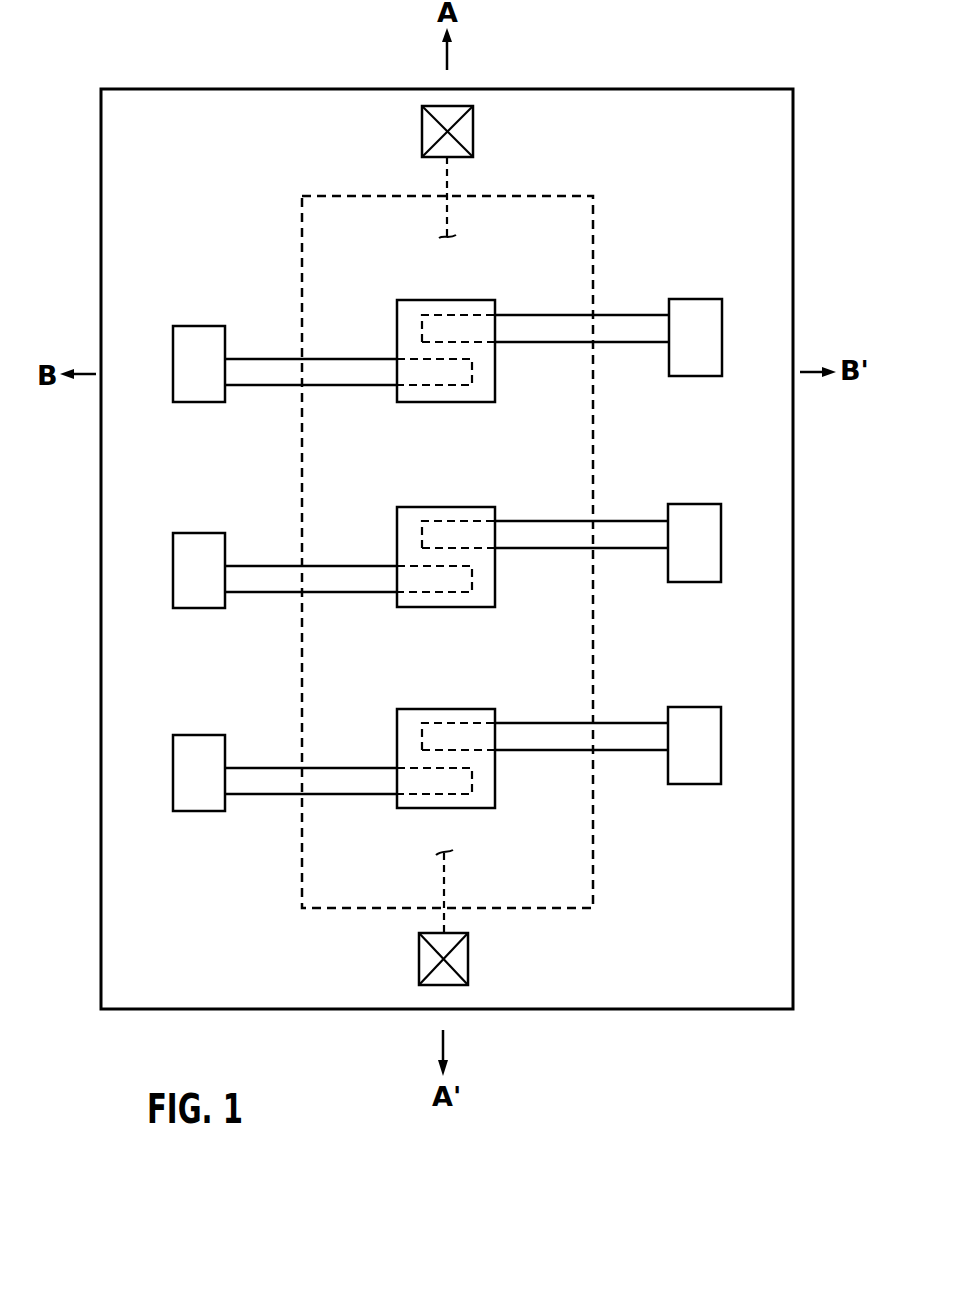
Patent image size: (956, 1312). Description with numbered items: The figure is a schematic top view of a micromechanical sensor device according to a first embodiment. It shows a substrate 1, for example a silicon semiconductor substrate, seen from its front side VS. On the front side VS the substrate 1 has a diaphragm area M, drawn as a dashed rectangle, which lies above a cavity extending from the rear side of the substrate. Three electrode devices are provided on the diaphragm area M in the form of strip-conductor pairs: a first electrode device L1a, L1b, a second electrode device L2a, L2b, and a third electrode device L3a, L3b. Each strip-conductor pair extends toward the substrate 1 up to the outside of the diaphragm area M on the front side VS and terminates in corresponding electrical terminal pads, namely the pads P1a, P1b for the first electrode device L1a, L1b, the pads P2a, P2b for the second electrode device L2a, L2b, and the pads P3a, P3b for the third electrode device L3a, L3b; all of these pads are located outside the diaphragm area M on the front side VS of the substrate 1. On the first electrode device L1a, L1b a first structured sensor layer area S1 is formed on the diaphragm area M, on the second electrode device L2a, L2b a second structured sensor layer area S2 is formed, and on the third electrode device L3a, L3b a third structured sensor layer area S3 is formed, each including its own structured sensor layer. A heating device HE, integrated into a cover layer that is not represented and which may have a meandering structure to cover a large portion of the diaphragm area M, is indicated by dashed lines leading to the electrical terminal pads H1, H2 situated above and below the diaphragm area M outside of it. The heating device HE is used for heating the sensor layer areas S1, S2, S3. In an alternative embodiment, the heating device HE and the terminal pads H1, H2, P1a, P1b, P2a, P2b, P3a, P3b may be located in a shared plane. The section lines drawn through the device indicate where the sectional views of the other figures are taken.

The substrate 1 is at (742, 988).
The front side VS is at (153, 1001).
The diaphragm area M is at (547, 880).
The electrical terminal pad H1 is at (476, 131).
The electrical terminal pad H2 is at (470, 960).
The heating device HE is at (445, 218).
The first structured sensor layer area S1 is at (474, 300).
The second structured sensor layer area S2 is at (447, 507).
The third structured sensor layer area S3 is at (447, 709).
The electrical terminal pad P1a is at (201, 338).
The electrical terminal pad P1b is at (698, 308).
The electrical terminal pad P2a is at (201, 545).
The electrical terminal pad P2b is at (698, 514).
The electrical terminal pad P3a is at (201, 748).
The electrical terminal pad P3b is at (698, 716).
The first electrode device L1a is at (257, 372).
The first electrode device L1b is at (621, 326).
The second electrode device L2a is at (257, 578).
The second electrode device L2b is at (621, 532).
The third electrode device L3a is at (257, 781).
The third electrode device L3b is at (621, 735).